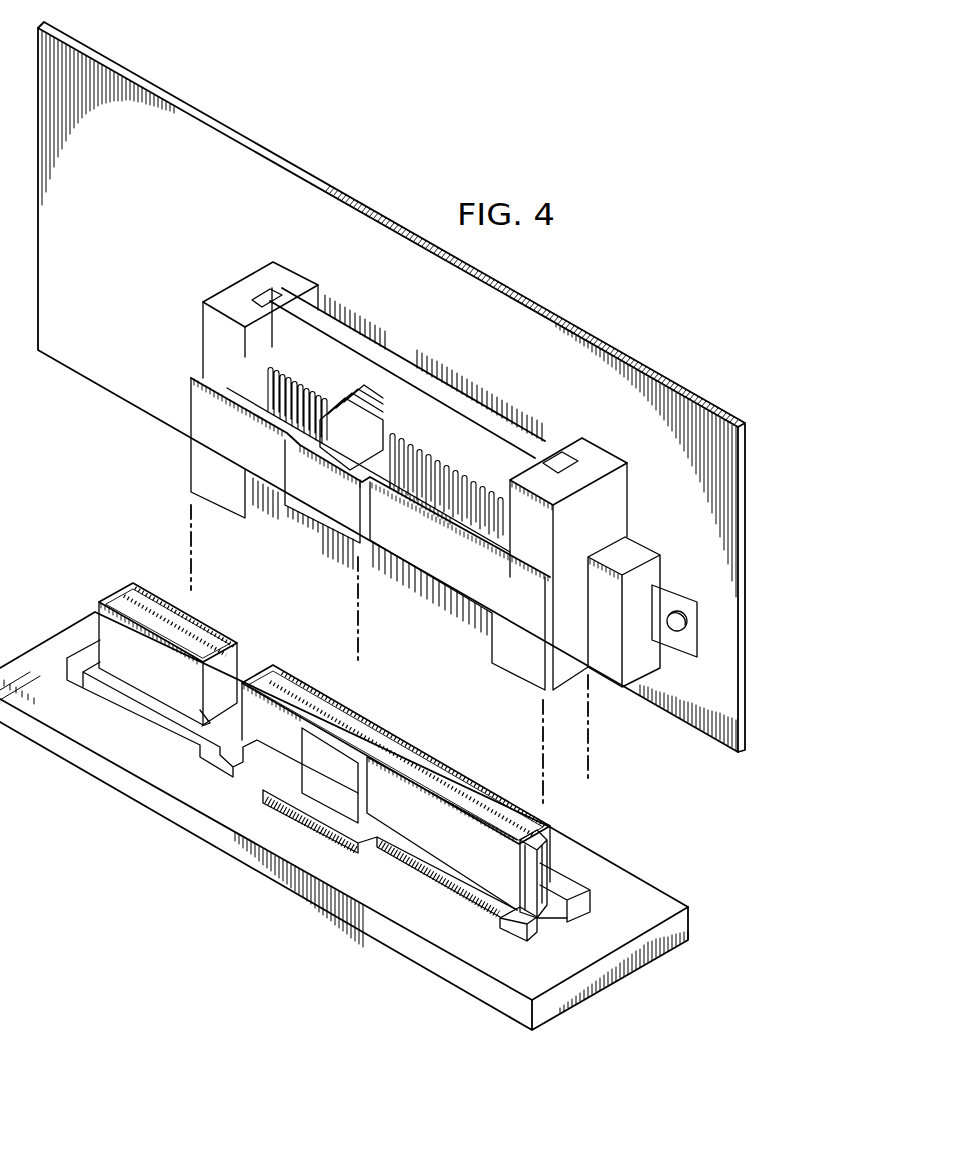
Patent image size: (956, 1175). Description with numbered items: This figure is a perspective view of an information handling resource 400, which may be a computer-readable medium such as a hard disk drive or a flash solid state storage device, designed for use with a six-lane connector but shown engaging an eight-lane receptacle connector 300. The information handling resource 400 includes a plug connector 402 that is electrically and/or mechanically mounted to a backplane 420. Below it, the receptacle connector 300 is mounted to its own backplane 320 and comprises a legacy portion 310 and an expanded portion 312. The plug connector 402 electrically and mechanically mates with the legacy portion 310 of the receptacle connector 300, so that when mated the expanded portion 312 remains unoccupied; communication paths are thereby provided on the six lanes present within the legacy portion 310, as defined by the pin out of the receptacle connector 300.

The eight-lane receptacle connector 300 is at (552, 893).
The legacy portion 310 is at (440, 830).
The expanded portion 312 is at (155, 665).
The backplane 320 is at (232, 810).
The information handling resource 400 is at (427, 387).
The plug connector 402 is at (620, 511).
The backplane 420 is at (161, 257).